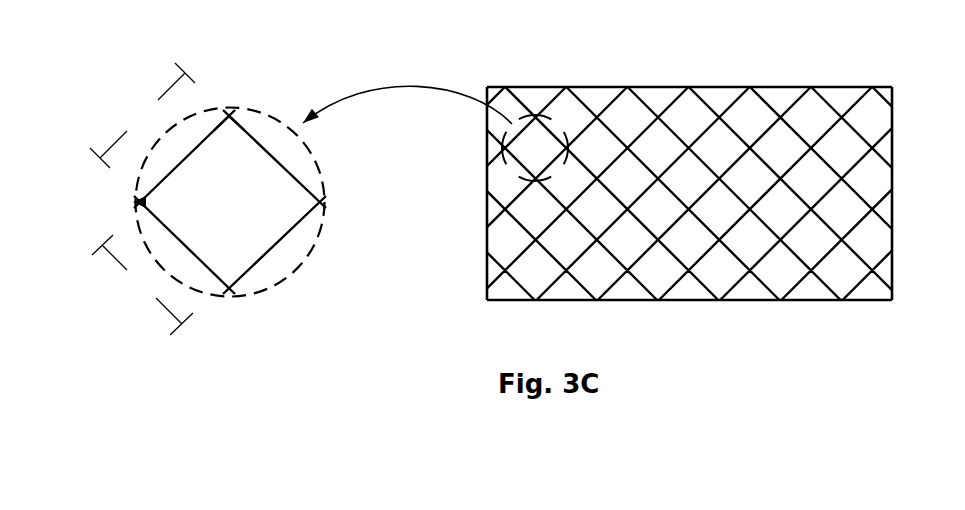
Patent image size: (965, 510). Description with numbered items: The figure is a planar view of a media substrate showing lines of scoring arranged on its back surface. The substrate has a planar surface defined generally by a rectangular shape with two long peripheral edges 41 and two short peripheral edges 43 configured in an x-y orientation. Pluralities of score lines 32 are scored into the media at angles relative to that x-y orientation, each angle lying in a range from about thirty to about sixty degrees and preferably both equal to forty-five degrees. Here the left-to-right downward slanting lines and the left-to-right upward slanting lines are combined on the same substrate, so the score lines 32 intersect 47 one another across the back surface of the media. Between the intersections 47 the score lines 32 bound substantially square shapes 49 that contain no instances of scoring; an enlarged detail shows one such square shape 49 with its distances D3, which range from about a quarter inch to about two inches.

The score lines 32 is at (587, 103).
The long peripheral edges 41 is at (727, 87).
The short peripheral edges 43 is at (487, 180).
The intersection 47 is at (230, 103).
The square shapes 49 is at (215, 213).
The distances D3 is at (142, 199).